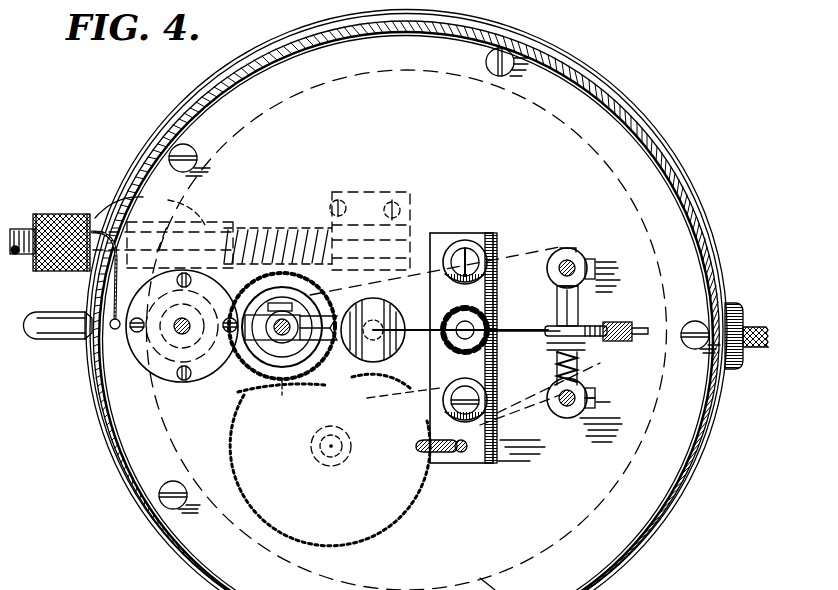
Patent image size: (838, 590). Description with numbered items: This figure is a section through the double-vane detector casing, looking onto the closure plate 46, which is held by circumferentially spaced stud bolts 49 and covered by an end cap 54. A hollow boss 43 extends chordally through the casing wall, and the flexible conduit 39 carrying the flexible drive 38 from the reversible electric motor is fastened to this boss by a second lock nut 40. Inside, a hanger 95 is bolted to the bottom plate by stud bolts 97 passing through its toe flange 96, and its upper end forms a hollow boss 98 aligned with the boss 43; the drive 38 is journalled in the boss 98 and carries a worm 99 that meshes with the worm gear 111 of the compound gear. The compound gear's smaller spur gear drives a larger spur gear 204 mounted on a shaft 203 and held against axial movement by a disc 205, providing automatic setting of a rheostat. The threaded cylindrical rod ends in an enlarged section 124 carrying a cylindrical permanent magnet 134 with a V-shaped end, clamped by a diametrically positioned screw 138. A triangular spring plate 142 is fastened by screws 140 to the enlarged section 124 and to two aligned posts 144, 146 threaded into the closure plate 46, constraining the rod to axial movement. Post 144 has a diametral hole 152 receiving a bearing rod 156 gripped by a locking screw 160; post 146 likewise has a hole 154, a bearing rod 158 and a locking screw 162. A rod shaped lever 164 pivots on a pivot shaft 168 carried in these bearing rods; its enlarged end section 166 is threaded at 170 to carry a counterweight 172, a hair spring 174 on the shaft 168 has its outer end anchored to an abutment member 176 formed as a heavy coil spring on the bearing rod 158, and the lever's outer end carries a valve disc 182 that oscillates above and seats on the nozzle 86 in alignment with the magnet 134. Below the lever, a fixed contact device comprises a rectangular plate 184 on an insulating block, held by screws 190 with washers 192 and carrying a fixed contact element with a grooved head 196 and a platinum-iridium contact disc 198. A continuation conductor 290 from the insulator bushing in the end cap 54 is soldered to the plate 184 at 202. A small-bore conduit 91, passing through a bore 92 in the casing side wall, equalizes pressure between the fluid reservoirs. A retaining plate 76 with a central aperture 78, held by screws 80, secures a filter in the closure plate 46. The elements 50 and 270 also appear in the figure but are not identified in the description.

The flexible drive 38 is at (15, 254).
The flexible conduit 39 is at (22, 229).
The second lock nut 40 is at (66, 214).
The hollow boss 43 is at (150, 208).
The closure plate 46 is at (238, 107).
The stud bolts 49 is at (197, 161).
The knob 50 is at (742, 312).
The end cap 54 is at (688, 166).
The retaining plate 76 is at (163, 298).
The central aperture 78 is at (178, 332).
The screws 80 is at (191, 384).
The nozzle 86 is at (376, 360).
The conduit 91 is at (427, 32).
The bore 92 is at (115, 330).
The hanger 95 is at (411, 231).
The toe flange 96 is at (406, 195).
The stud bolts 97 is at (392, 200).
The hollow boss 98 is at (337, 222).
The worm 99 is at (280, 226).
The worm gear 111 is at (289, 402).
The enlarged rod section 124 is at (287, 347).
The cylindrical permanent magnet 134 is at (322, 341).
The screw 138 is at (278, 310).
The screws 140 is at (286, 318).
The triangular spring plate 142 is at (324, 393).
The post 144 is at (586, 262).
The post 146 is at (566, 416).
The diametral hole 152 is at (559, 282).
The diametral hole 154 is at (557, 410).
The bearing rod 156 is at (560, 301).
The bearing rod 158 is at (596, 392).
The locking screw 160 is at (597, 275).
The locking screw 162 is at (598, 404).
The rod shaped lever 164 is at (530, 333).
The enlarged end section 166 is at (606, 323).
The pivot shaft 168 is at (585, 324).
The threads 170 is at (631, 336).
The counterweight 172 is at (628, 324).
The hair spring 174 is at (592, 341).
The abutment member 176 is at (590, 360).
The valve disc 182 is at (386, 310).
The rectangular plate 184 is at (447, 233).
The screws 190 is at (478, 264).
The washers 192 is at (468, 255).
The grooved head 196 is at (446, 352).
The fixed contact disc 198 is at (460, 316).
The soldering 202 is at (461, 453).
The shaft 203 is at (343, 446).
The spur gear 204 is at (380, 540).
The disc 205 is at (330, 464).
The threaded shaft 270 is at (756, 350).
The continuation conductor 290 is at (424, 450).